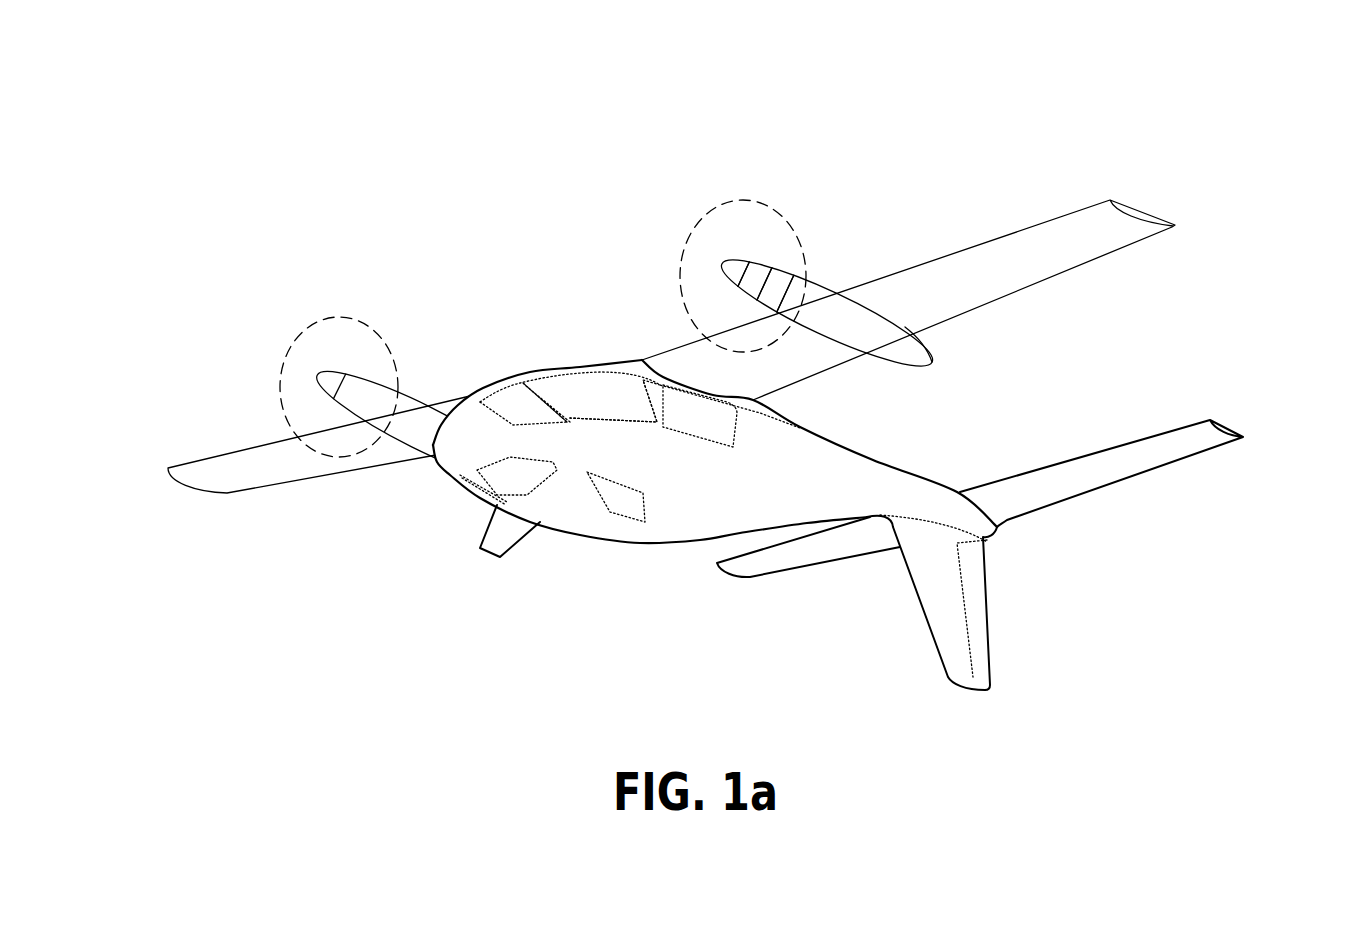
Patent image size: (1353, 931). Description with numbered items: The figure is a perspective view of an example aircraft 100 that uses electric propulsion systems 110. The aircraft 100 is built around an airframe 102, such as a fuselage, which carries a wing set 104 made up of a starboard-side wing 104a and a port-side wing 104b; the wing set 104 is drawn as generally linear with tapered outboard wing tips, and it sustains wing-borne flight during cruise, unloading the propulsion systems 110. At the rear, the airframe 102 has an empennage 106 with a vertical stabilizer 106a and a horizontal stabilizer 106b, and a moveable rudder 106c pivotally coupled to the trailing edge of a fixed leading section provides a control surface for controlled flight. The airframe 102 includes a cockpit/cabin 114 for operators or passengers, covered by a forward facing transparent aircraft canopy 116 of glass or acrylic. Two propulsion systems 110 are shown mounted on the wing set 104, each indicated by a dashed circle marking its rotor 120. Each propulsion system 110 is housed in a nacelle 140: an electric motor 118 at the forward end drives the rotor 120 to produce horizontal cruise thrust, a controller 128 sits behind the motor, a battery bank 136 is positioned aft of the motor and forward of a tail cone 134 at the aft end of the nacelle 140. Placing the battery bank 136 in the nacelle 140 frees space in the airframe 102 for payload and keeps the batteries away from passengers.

The aircraft 100 is at (258, 127).
The airframe 102 is at (662, 538).
The wing set 104 is at (115, 475).
The starboard-side wing 104a is at (233, 497).
The port-side wing 104b is at (1048, 215).
The empennage 106 is at (1247, 413).
The vertical stabilizer 106a is at (925, 622).
The horizontal stabilizer 106b is at (1130, 480).
The rudder 106c is at (988, 640).
The propulsion system 110 is at (402, 308).
The cockpit/cabin 114 is at (612, 398).
The aircraft canopy 116 is at (565, 370).
The electric motor 118 is at (755, 281).
The rotor 120 is at (717, 213).
The controller 128 is at (775, 290).
The tail cone 134 is at (900, 370).
The battery bank 136 is at (827, 332).
The nacelle 140 is at (817, 287).